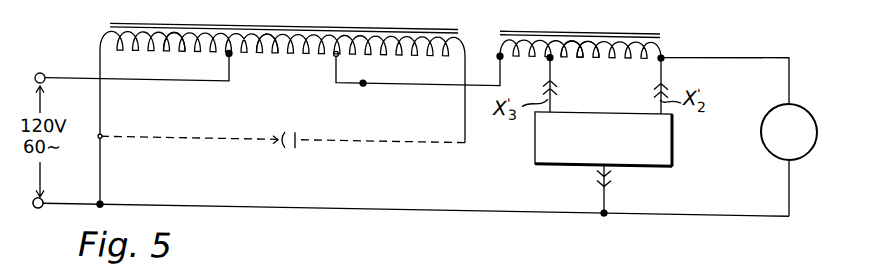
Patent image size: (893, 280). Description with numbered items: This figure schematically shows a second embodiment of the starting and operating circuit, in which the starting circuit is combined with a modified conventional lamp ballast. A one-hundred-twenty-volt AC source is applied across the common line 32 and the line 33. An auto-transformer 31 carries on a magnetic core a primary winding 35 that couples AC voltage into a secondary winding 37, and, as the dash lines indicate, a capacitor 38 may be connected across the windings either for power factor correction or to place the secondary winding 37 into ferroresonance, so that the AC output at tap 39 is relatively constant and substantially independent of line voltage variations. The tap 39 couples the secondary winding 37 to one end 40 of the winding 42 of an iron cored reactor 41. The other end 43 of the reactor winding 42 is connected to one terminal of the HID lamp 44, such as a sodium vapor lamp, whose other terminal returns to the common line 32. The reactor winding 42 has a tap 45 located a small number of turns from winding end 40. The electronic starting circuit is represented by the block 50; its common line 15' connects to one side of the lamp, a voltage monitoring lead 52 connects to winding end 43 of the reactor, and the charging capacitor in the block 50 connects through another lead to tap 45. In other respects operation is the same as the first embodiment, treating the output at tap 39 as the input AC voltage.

The primary winding (autotransformer) with core 31 is at (392, 23).
The common line 32 is at (59, 181).
The line 33 is at (78, 79).
The primary winding 35 is at (184, 48).
The secondary winding 37 is at (262, 46).
The capacitor 38 is at (295, 143).
The tap 39 is at (363, 78).
The winding end 40 is at (499, 48).
The iron cored reactor 41 is at (571, 22).
The reactor winding 42 is at (583, 48).
The winding end 43 is at (661, 44).
The HID lamp 44 is at (817, 114).
The tap 45 is at (550, 52).
The block 50 is at (673, 129).
The lead with connector 52 is at (667, 59).
The common line 15' is at (629, 191).